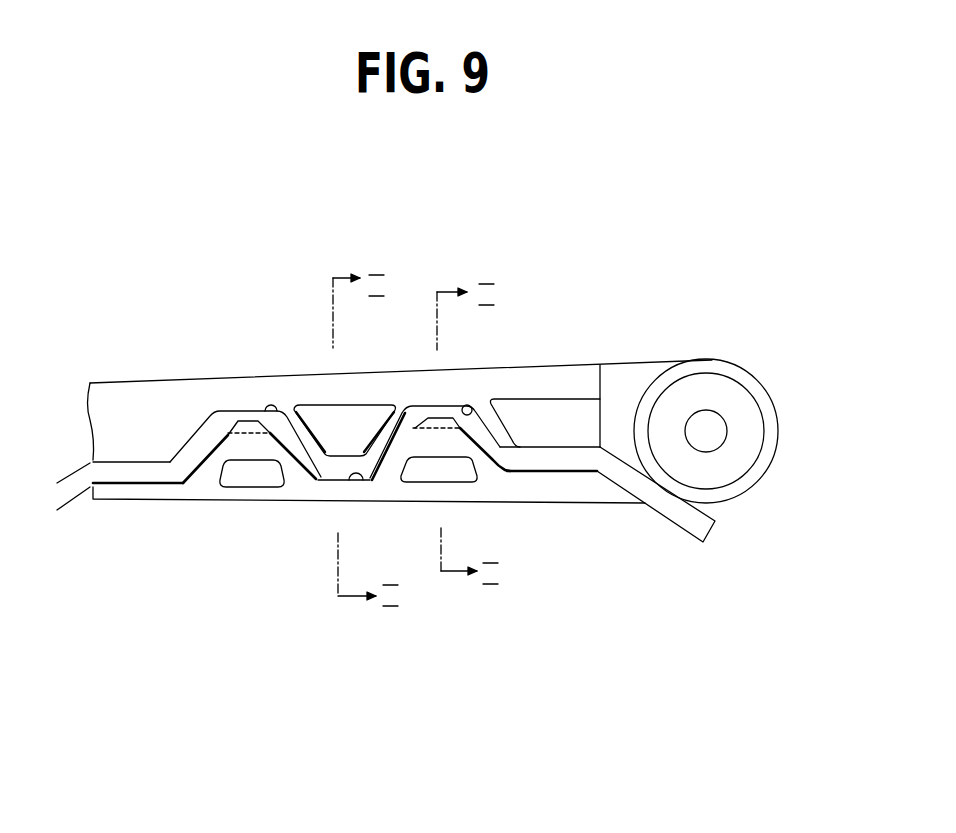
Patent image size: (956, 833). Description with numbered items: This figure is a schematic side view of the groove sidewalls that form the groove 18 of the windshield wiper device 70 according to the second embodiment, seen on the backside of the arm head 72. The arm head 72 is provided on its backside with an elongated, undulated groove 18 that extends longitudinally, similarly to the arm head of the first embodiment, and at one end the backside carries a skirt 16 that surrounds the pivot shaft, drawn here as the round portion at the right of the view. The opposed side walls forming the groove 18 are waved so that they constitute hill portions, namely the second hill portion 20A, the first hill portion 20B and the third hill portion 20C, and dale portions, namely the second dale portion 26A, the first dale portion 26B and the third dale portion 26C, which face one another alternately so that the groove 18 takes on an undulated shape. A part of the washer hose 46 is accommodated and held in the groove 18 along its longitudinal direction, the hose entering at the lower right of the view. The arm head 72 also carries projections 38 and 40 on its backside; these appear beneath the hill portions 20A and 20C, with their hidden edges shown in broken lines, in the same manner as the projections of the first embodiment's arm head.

The windshield wiper device 70 is at (398, 262).
The arm head 72 is at (561, 364).
The groove 18 is at (351, 426).
The second hill portion 20A is at (426, 407).
The first hill portion 20B is at (320, 499).
The third hill portion 20C is at (237, 408).
The second dale portion 26A is at (475, 408).
The first dale portion 26B is at (357, 485).
The third dale portion 26C is at (274, 403).
The projection 38 is at (447, 416).
The projection 40 is at (256, 420).
The washer hose 46 is at (681, 528).
The skirt 16 is at (763, 460).